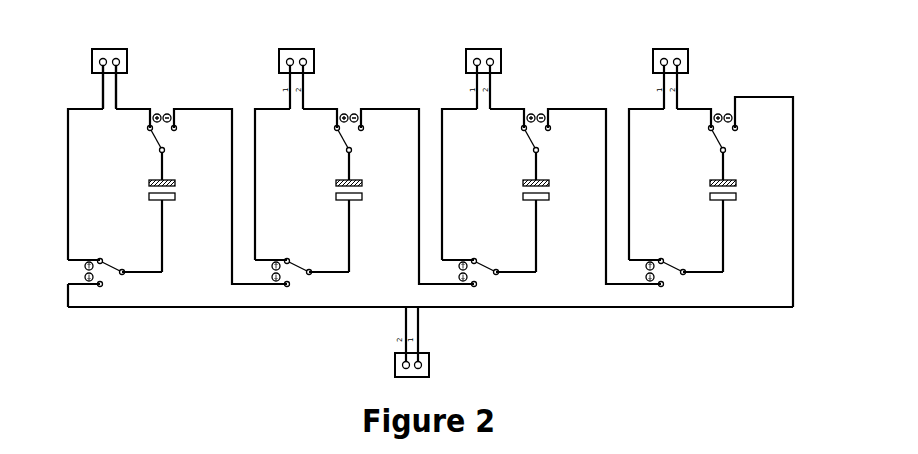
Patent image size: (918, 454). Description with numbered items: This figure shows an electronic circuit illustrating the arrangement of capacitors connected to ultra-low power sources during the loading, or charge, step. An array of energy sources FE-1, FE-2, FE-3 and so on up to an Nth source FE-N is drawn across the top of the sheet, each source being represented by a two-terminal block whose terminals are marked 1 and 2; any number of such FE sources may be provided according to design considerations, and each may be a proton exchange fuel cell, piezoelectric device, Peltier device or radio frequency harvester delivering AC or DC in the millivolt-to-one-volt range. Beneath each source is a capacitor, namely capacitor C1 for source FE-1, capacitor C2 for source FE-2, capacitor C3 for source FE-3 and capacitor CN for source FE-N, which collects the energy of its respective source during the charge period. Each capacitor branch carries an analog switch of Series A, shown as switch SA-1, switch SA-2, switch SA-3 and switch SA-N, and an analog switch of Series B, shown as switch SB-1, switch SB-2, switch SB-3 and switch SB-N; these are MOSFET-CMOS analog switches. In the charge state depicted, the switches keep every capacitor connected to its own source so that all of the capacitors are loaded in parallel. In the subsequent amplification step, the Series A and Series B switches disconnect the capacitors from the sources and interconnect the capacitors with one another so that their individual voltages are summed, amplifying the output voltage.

The energy source FE-1 is at (109, 71).
The energy source FE-2 is at (296, 71).
The energy source FE-3 is at (483, 71).
The energy source FE-N is at (670, 71).
The analog switch Series A SA-1 is at (181, 133).
The analog switch Series A SA-2 is at (368, 133).
The analog switch Series A SA-3 is at (555, 133).
The analog switch Series A SA-N is at (742, 133).
The capacitor C1 is at (173, 190).
The capacitor C2 is at (360, 190).
The capacitor C3 is at (547, 190).
The capacitor CN is at (735, 190).
The analog switch Series B SB-1 is at (105, 265).
The analog switch Series B SB-2 is at (292, 265).
The analog switch Series B SB-3 is at (479, 265).
The analog switch Series B SB-N is at (666, 265).
The terminal 1 is at (99, 87).
The terminal 2 is at (112, 87).